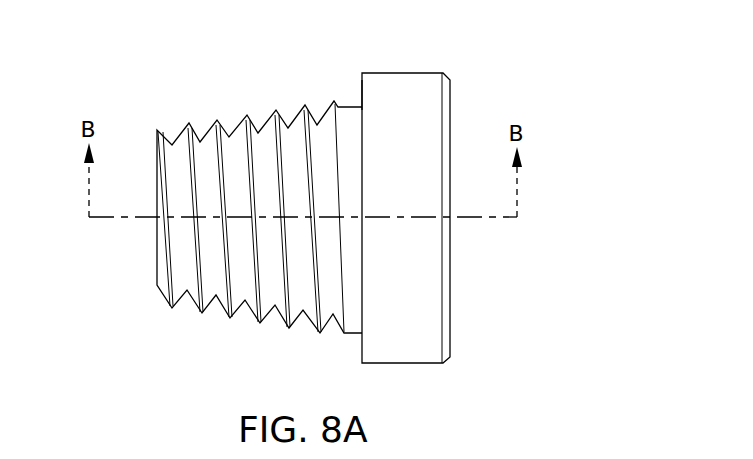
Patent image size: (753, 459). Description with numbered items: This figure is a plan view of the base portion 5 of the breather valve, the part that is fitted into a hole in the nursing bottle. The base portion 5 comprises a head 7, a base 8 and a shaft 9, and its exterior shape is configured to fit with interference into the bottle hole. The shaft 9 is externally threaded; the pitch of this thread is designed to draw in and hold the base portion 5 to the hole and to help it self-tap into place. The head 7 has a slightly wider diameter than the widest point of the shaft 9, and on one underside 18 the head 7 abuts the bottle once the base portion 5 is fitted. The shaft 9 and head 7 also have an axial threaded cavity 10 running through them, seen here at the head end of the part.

The base portion 5 is at (448, 62).
The head 7 is at (402, 72).
The base 8 is at (140, 255).
The shaft 9 is at (207, 97).
The axial threaded cavity 10 is at (457, 270).
The underside 18 is at (362, 84).